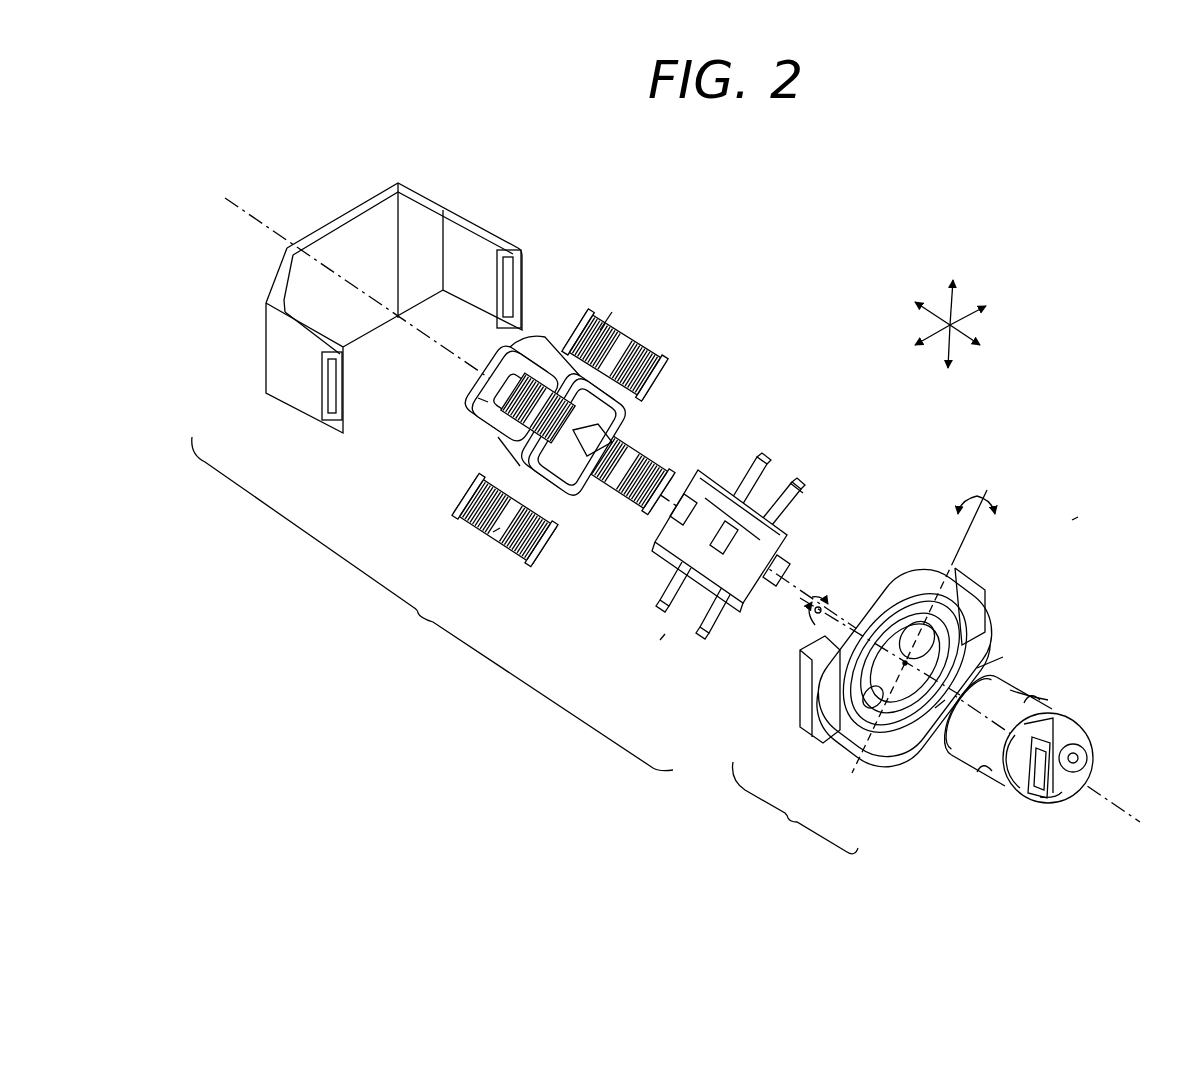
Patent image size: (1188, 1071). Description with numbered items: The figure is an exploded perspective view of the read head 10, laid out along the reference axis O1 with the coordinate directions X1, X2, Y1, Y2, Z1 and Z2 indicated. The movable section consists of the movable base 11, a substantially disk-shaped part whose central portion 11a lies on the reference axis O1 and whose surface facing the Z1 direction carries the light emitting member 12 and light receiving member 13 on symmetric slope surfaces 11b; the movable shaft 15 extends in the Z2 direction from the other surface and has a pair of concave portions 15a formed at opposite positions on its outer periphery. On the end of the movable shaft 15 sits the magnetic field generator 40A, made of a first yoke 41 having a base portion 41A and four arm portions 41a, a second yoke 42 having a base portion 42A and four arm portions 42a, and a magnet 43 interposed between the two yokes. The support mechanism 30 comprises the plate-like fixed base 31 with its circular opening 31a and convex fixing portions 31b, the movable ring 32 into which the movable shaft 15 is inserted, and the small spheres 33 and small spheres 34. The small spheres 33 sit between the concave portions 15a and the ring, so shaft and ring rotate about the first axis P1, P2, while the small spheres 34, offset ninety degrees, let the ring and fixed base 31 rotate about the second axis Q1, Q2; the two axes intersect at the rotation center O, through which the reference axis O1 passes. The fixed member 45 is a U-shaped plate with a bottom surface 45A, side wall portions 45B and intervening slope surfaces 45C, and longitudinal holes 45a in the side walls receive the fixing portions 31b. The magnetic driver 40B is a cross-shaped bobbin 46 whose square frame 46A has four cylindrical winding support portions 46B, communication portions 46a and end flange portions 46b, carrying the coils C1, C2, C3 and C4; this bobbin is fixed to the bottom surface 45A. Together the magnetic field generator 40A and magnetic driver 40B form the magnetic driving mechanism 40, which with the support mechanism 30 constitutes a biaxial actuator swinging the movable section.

The read head 10 is at (1078, 517).
The movable base 11 is at (1051, 767).
The central portion 11a is at (1054, 742).
The slope surfaces 11b is at (1062, 802).
The light emitting member 12 is at (1088, 757).
The light receiving member 13 is at (1037, 803).
The movable shaft 15 is at (1012, 692).
The concave portions 15a is at (1043, 700).
The support mechanism 30 is at (888, 657).
The fixed base 31 is at (853, 737).
The opening 31a is at (935, 708).
The fixing portions 31b is at (797, 708).
The movable ring 32 is at (887, 743).
The small spheres 33 is at (905, 728).
The small spheres 34 is at (868, 627).
The magnetic driving mechanism 40 is at (432, 604).
The magnetic field generator 40A is at (660, 640).
The magnetic driver 40B is at (493, 532).
The first yoke 41 is at (743, 613).
The base portion 41A is at (783, 525).
The arm portions 41a is at (790, 483).
The second yoke 42 is at (727, 536).
The base portion 42A is at (713, 497).
The arm portions 42a is at (760, 463).
The magnet 43 is at (722, 486).
The fixed member 45 is at (379, 307).
The bottom surface 45A is at (353, 227).
The side wall portions 45B is at (467, 235).
The slope surfaces 45C is at (423, 208).
The longitudinal holes 45a is at (508, 267).
The bobbin 46 is at (566, 429).
The frame 46A is at (630, 403).
The winding support portions 46B is at (612, 312).
The communication portions 46a is at (512, 380).
The flange portions 46b is at (623, 337).
The coil C1 is at (640, 348).
The coil C2 is at (473, 480).
The coil C3 is at (483, 440).
The coil C4 is at (580, 473).
The rotation center O is at (937, 712).
The reference axis O1 is at (682, 512).
The first axis P1 is at (953, 560).
The first axis P2 is at (865, 735).
The second axis Q1 is at (864, 644).
The second axis Q2 is at (1009, 659).
The X direction X1 is at (988, 305).
The X direction X2 is at (915, 344).
The Y direction Y1 is at (953, 286).
The Y direction Y2 is at (946, 364).
The Z direction Z1 is at (986, 344).
The Z direction Z2 is at (914, 303).